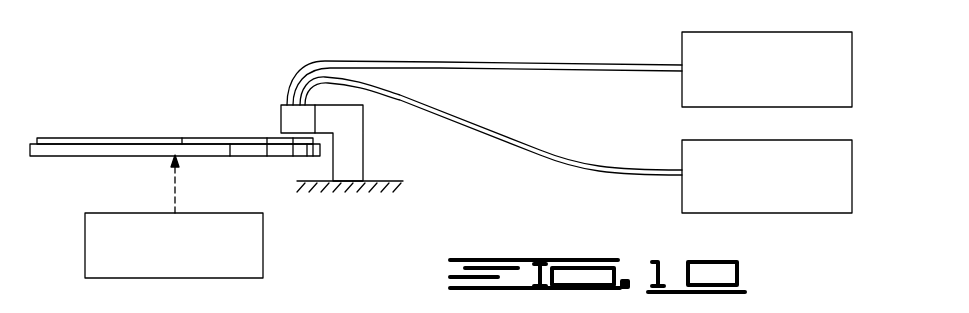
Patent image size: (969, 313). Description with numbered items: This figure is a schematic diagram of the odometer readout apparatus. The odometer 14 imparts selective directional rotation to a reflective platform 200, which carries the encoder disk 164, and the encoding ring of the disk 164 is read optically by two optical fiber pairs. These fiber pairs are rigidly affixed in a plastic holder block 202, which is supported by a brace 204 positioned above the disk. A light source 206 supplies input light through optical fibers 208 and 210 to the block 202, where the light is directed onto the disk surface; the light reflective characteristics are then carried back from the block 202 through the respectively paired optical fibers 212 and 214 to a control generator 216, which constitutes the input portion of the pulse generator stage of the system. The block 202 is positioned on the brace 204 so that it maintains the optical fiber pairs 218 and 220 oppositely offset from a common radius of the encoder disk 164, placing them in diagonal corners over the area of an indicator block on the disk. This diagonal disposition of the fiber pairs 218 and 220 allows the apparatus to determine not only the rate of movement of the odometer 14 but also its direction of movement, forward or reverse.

The odometer 14 is at (263, 249).
The encoder disk 164 is at (153, 138).
The reflective platform 200 is at (92, 150).
The plastic holder block 202 is at (280, 118).
The brace 204 is at (352, 142).
The light source 206 is at (776, 32).
The optical fiber 208 is at (563, 62).
The optical fiber 210 is at (565, 74).
The optical fiber 212 is at (557, 150).
The optical fiber 214 is at (546, 158).
The control generator 216 is at (765, 213).
The optical fiber pair 218 is at (290, 70).
The optical fiber pair 220 is at (325, 96).